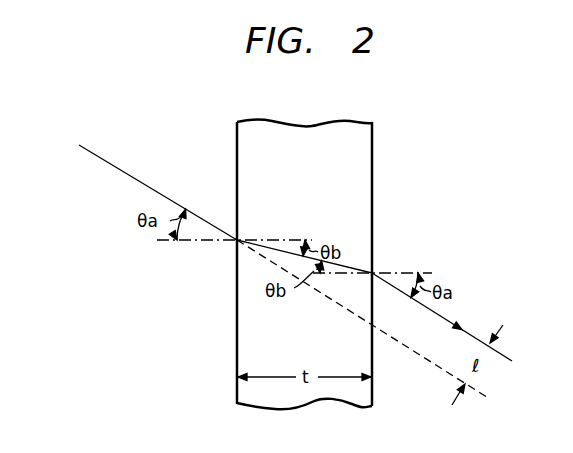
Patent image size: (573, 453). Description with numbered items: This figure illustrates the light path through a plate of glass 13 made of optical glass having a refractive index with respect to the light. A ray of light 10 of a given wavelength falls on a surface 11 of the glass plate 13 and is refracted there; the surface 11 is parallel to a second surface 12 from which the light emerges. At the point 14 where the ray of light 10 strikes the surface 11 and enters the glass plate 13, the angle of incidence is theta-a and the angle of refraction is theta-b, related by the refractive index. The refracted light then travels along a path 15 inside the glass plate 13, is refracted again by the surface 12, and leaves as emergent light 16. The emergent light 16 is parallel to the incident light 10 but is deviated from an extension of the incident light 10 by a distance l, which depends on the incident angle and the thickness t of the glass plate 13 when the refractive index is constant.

The ray of light 10 is at (121, 170).
The surface 11 is at (235, 162).
The surface 12 is at (373, 163).
The plate of glass 13 is at (318, 124).
The point 14 is at (235, 243).
The path 15 is at (346, 264).
The emergent light 16 is at (445, 318).